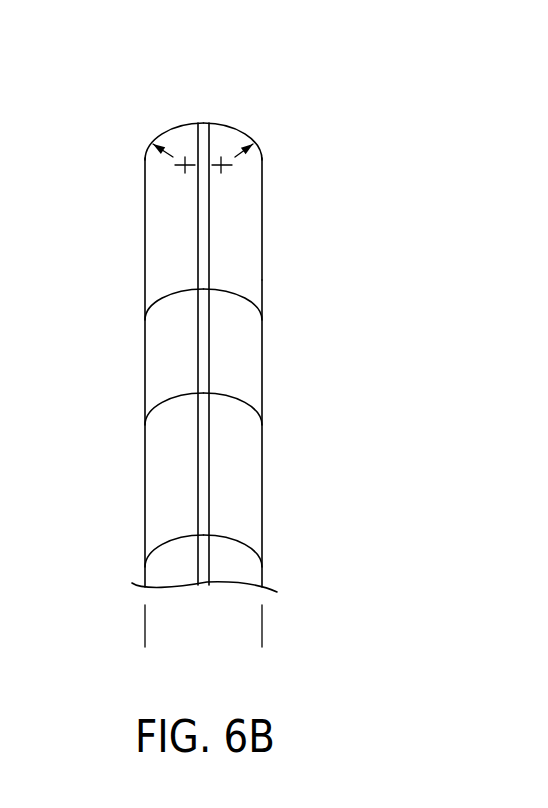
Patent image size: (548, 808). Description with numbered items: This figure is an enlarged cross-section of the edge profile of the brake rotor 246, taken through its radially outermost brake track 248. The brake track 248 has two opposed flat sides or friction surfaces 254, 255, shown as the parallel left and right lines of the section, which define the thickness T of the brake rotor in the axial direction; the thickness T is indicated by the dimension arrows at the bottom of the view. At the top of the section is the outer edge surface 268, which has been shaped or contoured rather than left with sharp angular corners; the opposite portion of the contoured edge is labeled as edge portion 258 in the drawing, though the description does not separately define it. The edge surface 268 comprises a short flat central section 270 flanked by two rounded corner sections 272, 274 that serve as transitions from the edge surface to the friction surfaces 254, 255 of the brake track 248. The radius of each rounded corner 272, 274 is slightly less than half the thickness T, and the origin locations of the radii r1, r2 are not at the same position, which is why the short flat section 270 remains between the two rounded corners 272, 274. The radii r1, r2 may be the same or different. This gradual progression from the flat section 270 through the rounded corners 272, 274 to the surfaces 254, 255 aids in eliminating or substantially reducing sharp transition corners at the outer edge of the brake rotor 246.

The brake rotor 246 is at (352, 112).
The brake track 248 is at (263, 265).
The friction surface 254 is at (145, 247).
The friction surface 255 is at (263, 280).
The rounded edge 258 is at (222, 121).
The outer edge surface 268 is at (185, 121).
The flat central section 270 is at (205, 134).
The rounded corner section 272 is at (182, 143).
The rounded corner section 274 is at (226, 142).
The radius r1 is at (175, 165).
The radius r2 is at (232, 165).
The thickness T is at (261, 626).